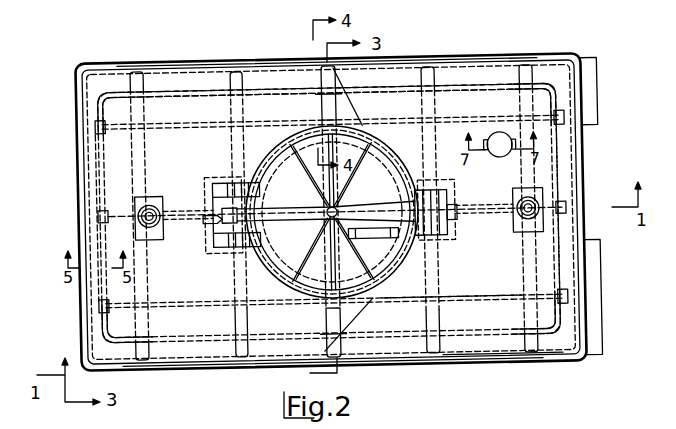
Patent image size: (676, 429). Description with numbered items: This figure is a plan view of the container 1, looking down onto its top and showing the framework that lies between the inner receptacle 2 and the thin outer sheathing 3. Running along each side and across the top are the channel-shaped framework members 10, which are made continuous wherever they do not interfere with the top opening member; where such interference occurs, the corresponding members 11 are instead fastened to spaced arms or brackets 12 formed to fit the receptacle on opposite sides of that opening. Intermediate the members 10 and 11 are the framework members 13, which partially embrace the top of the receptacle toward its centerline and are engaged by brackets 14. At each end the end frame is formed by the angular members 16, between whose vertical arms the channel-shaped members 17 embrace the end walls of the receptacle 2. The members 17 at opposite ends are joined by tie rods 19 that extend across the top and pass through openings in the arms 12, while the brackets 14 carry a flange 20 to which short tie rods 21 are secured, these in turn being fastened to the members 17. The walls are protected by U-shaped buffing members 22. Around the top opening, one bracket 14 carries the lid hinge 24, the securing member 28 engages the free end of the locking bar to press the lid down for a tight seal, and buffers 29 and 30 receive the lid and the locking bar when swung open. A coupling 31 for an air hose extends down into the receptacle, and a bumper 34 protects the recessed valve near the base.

The container 1 is at (481, 57).
The inner receptacle 2 is at (457, 331).
The outer sheathing 3 is at (483, 343).
The framework members 10 is at (152, 355).
The framework members 11 is at (305, 367).
The spaced arms or brackets 12 is at (324, 334).
The framework members 13 is at (426, 361).
The brackets 14 is at (425, 177).
The members 16 is at (568, 182).
The vertically disposed members 17 is at (578, 132).
The tie rods 19 is at (157, 300).
The flange 20 is at (458, 206).
The short tie rods 21 is at (486, 216).
The buffing members 22 is at (479, 362).
The hinge 24 is at (229, 241).
The securing member 28 is at (206, 223).
The buffer 29 is at (162, 198).
The buffer 30 is at (520, 229).
The coupling 31 is at (497, 131).
The bumper 34 is at (603, 270).